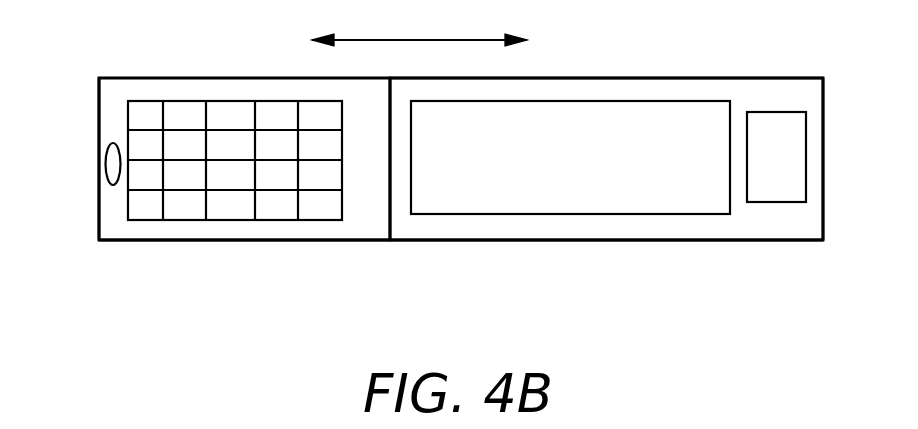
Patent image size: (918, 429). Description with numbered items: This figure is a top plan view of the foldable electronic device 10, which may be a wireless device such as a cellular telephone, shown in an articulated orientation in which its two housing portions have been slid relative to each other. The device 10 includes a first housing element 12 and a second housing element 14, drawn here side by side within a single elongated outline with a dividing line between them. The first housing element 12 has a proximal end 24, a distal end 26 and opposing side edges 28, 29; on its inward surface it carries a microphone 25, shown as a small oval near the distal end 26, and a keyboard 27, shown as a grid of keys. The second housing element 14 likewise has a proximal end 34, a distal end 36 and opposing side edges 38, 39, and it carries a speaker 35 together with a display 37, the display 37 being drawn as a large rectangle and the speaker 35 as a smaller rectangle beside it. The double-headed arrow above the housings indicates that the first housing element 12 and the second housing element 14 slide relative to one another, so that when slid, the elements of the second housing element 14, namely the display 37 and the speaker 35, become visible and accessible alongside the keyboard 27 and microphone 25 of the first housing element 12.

The foldable electronic device 10 is at (595, 275).
The first housing element 12 is at (148, 78).
The second housing element 14 is at (783, 78).
The proximal end 24 is at (461, 240).
The microphone 25 is at (106, 160).
The distal end 26 is at (99, 232).
The keyboard 27 is at (265, 220).
The side edge 28 is at (228, 78).
The side edge 29 is at (345, 240).
The proximal end 34 is at (823, 212).
The speaker 35 is at (806, 126).
The distal end 36 is at (389, 218).
The display 37 is at (653, 110).
The side edge 38 is at (602, 78).
The side edge 39 is at (655, 240).